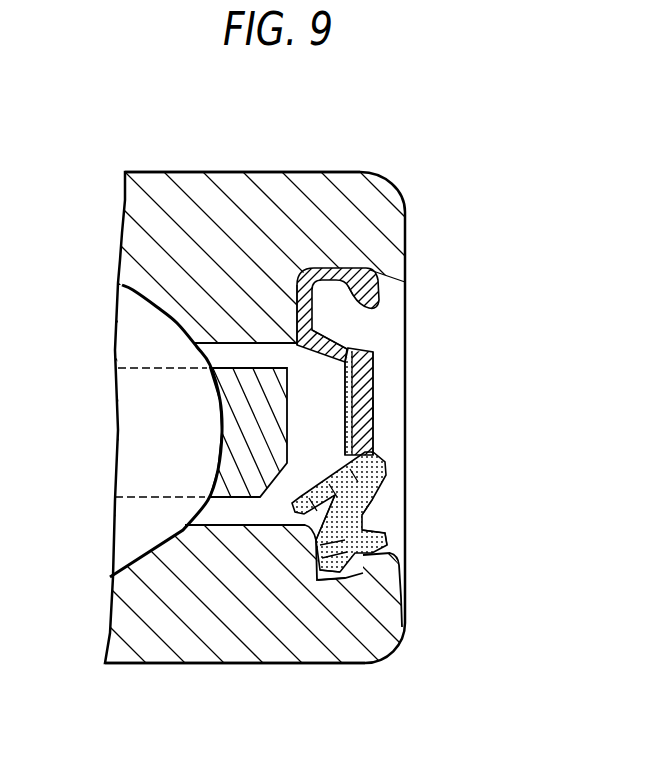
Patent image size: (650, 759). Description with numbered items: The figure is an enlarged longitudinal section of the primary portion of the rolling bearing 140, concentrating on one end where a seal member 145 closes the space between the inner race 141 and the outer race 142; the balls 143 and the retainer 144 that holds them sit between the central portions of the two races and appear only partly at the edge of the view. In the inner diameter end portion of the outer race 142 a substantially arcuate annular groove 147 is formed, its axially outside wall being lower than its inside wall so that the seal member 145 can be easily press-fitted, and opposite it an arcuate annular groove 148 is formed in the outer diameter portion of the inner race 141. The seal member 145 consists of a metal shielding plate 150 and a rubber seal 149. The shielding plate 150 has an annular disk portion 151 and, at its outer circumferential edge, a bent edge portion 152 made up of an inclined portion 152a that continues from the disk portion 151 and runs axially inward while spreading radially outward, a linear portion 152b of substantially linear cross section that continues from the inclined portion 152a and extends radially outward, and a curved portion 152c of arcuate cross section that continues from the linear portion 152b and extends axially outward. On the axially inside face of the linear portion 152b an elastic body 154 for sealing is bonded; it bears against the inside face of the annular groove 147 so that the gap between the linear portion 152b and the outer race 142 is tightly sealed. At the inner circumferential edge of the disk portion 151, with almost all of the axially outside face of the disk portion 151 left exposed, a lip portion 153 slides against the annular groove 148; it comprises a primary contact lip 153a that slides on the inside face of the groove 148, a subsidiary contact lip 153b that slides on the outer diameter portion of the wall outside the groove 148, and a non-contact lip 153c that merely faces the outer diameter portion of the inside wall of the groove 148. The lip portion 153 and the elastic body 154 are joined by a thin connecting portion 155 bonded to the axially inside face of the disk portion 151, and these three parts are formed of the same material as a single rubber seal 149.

The rolling bearing 140 is at (420, 183).
The inner race 141 is at (188, 647).
The outer race 142 is at (272, 172).
The balls 143 is at (125, 540).
The retainer 144 is at (240, 437).
The seal member 145 is at (385, 434).
The annular groove 147 is at (383, 280).
The annular groove 148 is at (365, 580).
The rubber seal 149 is at (390, 500).
The shielding plate 150 is at (375, 370).
The disk portion 151 is at (375, 395).
The bent edge portion 152 is at (380, 358).
The inclined portion 152a is at (340, 325).
The linear portion 152b is at (313, 318).
The curved portion 152c is at (372, 300).
The lip portion 153 is at (362, 538).
The primary contact lip 153a is at (318, 582).
The subsidiary contact lip 153b is at (368, 553).
The non-contact lip 153c is at (312, 530).
The elastic body for sealing 154 is at (118, 356).
The connecting portion 155 is at (375, 410).